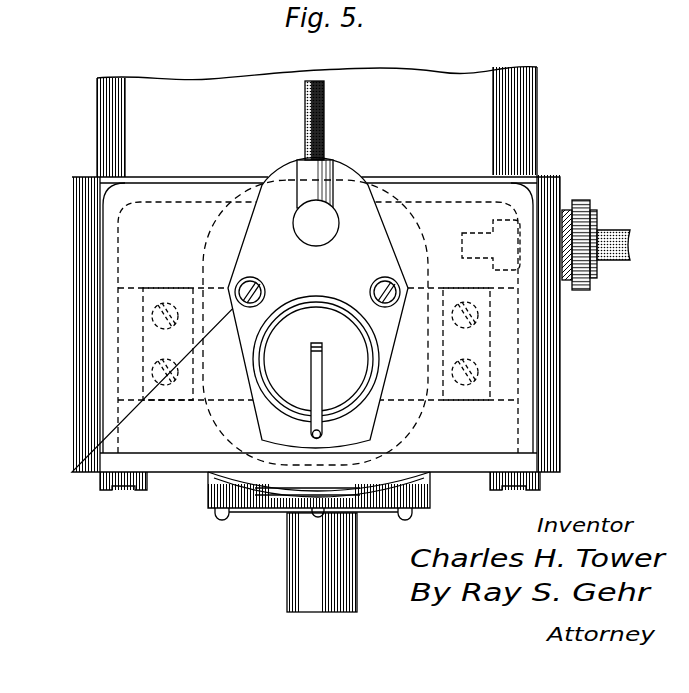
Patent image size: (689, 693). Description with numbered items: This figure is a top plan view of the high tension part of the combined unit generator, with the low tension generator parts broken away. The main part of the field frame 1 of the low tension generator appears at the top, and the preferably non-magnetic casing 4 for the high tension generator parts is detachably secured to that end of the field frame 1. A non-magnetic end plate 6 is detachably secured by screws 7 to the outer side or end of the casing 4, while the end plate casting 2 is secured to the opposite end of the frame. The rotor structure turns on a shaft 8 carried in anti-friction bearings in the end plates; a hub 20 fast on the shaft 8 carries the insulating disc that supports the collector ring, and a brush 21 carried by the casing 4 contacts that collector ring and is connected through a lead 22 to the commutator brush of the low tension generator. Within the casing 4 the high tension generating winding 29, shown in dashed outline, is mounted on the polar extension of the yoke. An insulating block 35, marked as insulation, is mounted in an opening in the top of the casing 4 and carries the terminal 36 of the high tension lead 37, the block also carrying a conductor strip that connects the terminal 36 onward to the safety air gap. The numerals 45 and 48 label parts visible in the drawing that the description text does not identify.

The field frame 1 is at (317, 122).
The end plate casting 2 is at (430, 506).
The casing 4 is at (80, 361).
The end plate 6 is at (190, 463).
The screws 7 is at (145, 482).
The shaft 8 is at (322, 562).
The hub 20 is at (470, 308).
The brush 21 is at (480, 239).
The lead 22 is at (620, 233).
The high tension generating winding 29 is at (204, 263).
The insulating block 35 is at (318, 303).
The terminal 36 is at (322, 232).
The high tension lead 37 is at (325, 112).
The lever 45 is at (319, 391).
The ring 48 is at (316, 359).